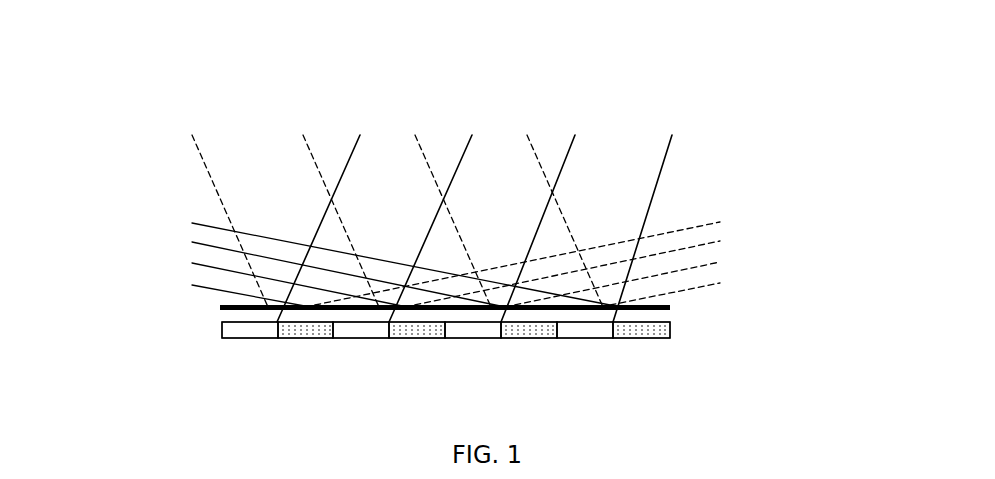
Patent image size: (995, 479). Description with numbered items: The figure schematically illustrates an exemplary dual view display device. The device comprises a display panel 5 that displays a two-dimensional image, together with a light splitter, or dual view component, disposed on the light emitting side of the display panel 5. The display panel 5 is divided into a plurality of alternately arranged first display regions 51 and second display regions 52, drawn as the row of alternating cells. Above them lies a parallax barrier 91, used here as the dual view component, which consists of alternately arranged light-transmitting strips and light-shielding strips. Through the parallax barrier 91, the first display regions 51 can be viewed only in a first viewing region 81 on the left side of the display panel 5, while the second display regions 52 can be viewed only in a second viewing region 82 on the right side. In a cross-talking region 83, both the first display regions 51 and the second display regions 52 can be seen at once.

The display panel 5 is at (690, 335).
The first display region 51 is at (413, 332).
The second display region 52 is at (580, 333).
The parallax barrier 91 is at (218, 307).
The first viewing region 81 is at (163, 243).
The second viewing region 82 is at (733, 248).
The cross-talking region 83 is at (440, 123).